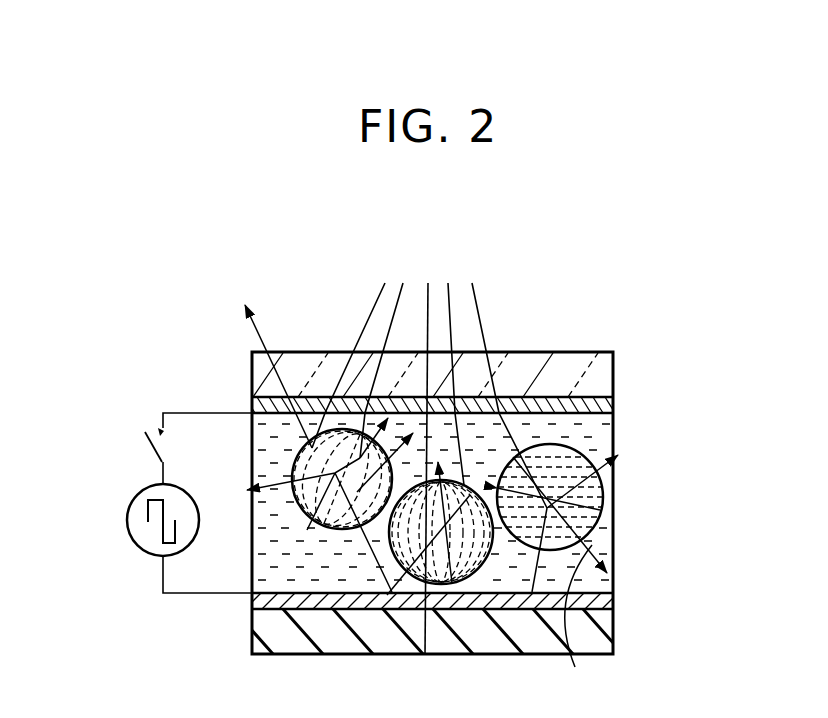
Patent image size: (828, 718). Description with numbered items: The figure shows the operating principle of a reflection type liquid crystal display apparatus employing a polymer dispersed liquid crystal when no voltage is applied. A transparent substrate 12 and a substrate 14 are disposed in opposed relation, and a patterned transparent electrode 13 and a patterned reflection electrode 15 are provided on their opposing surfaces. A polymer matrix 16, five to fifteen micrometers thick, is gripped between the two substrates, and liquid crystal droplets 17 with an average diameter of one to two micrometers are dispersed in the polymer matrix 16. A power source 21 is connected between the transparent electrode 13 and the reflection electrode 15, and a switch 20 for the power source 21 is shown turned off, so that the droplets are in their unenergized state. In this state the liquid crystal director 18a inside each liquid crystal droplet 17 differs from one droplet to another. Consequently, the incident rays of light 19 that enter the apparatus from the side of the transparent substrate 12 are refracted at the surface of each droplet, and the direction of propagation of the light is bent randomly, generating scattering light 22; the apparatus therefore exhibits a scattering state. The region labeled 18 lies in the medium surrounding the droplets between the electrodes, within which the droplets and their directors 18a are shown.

The transparent substrate 12 is at (605, 375).
The transparent electrode 13 is at (603, 408).
The substrate 14 is at (605, 648).
The reflection electrode 15 is at (608, 605).
The polymer matrix 16 is at (605, 450).
The liquid crystal droplets 17 is at (605, 502).
The liquid 18 is at (605, 535).
The liquid crystal director 18a is at (425, 655).
The incident rays of light 19 is at (483, 310).
The switch 20 is at (145, 446).
The power source 21 is at (150, 556).
The scattering light 22 is at (584, 624).